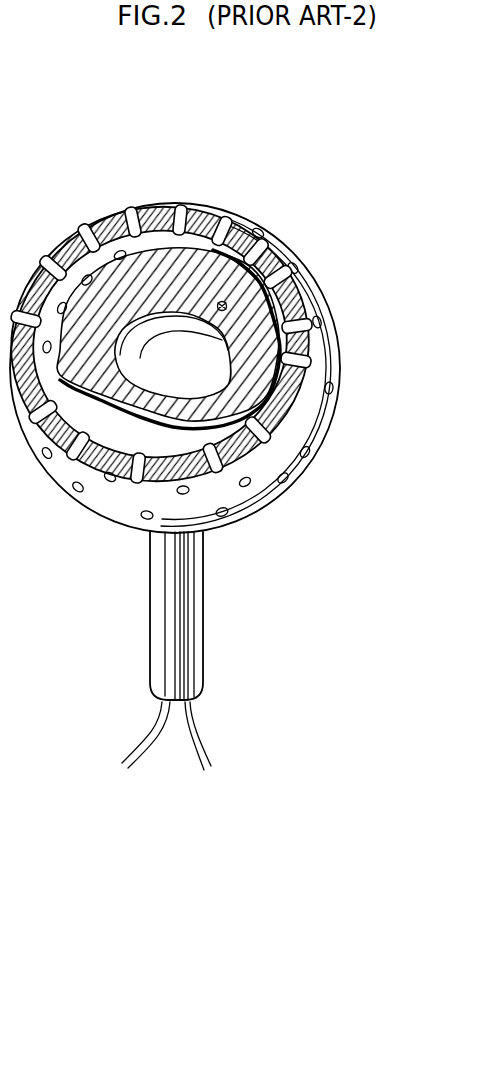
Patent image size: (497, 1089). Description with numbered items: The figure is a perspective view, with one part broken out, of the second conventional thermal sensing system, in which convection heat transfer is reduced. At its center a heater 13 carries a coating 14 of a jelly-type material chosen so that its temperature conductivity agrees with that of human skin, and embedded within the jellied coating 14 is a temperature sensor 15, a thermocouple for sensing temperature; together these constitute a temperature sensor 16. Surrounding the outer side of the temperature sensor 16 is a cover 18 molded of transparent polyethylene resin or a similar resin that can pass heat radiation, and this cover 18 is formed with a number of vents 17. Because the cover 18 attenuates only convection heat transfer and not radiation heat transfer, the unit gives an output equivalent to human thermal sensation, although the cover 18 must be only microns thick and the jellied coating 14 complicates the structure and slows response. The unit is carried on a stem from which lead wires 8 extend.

The lead wires 8 is at (126, 750).
The heater 13 is at (147, 335).
The coating 14 is at (211, 354).
The temperature sensor 15 is at (223, 302).
The temperature sensor 16 is at (375, 152).
The vents 17 is at (307, 360).
The cover 18 is at (338, 351).